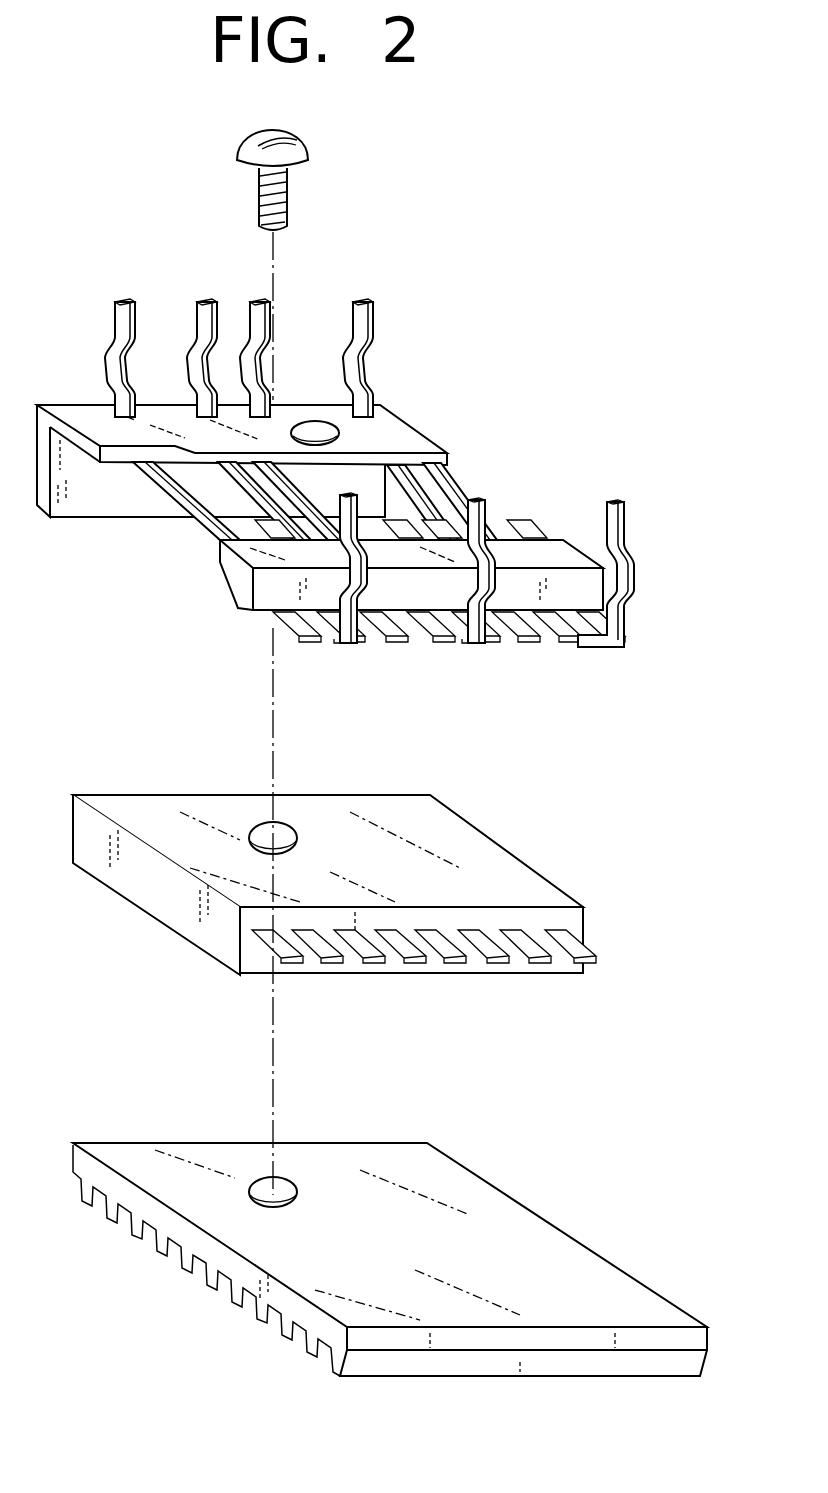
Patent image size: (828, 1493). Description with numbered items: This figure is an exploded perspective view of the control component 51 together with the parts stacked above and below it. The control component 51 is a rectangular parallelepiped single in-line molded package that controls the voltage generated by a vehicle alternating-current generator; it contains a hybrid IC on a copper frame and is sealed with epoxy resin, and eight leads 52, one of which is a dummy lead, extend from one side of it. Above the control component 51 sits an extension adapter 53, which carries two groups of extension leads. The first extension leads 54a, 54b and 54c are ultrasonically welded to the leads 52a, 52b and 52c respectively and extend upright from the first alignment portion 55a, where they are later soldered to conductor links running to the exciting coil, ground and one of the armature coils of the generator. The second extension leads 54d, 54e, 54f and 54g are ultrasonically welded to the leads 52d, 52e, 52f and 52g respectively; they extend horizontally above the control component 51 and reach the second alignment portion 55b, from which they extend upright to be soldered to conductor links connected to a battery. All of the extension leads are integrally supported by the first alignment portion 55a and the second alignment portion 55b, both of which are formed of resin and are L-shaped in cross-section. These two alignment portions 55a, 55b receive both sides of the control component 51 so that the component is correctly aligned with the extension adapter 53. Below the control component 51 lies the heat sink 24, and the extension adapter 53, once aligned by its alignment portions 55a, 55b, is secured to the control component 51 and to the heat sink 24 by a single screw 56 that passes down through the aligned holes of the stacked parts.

The heat sink 24 is at (613, 1265).
The control component 51 is at (503, 858).
The leads 52 is at (500, 960).
The lead 52a is at (317, 947).
The lead 52b is at (462, 960).
The lead 52c is at (600, 960).
The lead 52d is at (263, 947).
The lead 52e is at (353, 963).
The lead 52f is at (403, 947).
The lead 52g is at (550, 960).
The extension adapter 53 is at (478, 438).
The first extension lead 54a is at (357, 643).
The first extension lead 54b is at (487, 513).
The first extension lead 54c is at (624, 520).
The second extension lead 54d is at (135, 317).
The second extension lead 54e is at (215, 298).
The second extension lead 54f is at (272, 306).
The second extension lead 54g is at (370, 300).
The first alignment portion 55a is at (253, 580).
The second alignment portion 55b is at (122, 427).
The screw 56 is at (310, 147).